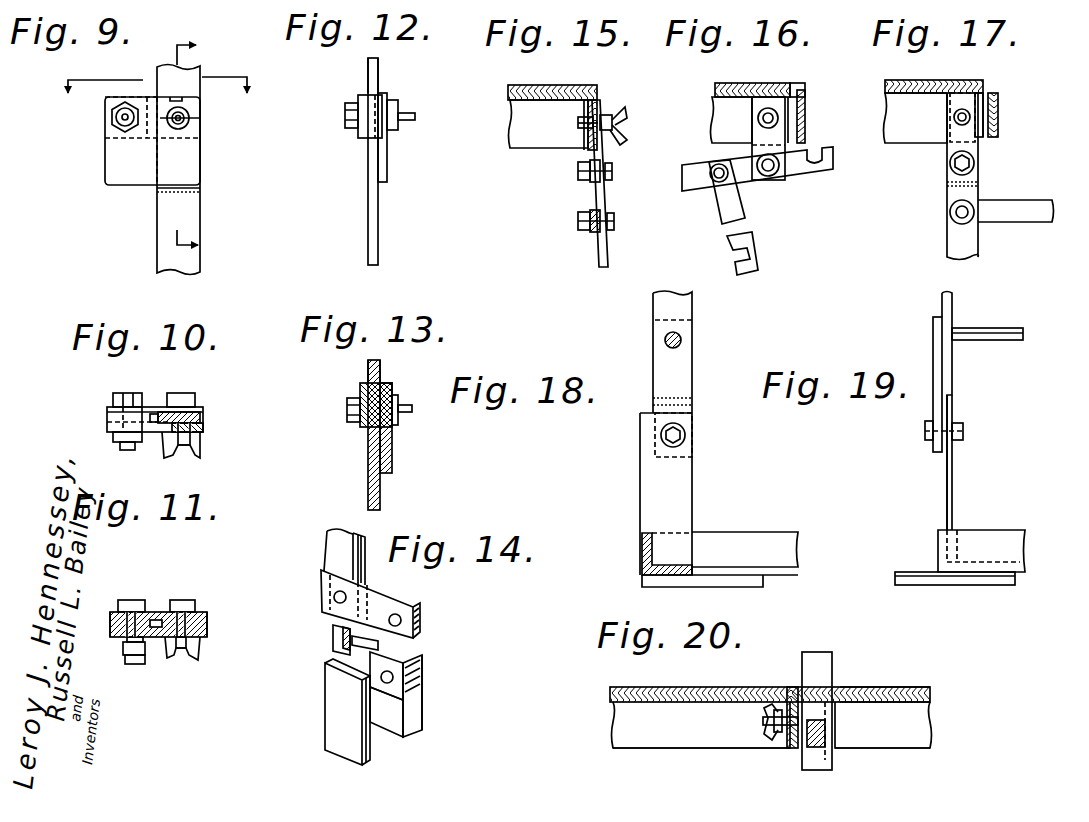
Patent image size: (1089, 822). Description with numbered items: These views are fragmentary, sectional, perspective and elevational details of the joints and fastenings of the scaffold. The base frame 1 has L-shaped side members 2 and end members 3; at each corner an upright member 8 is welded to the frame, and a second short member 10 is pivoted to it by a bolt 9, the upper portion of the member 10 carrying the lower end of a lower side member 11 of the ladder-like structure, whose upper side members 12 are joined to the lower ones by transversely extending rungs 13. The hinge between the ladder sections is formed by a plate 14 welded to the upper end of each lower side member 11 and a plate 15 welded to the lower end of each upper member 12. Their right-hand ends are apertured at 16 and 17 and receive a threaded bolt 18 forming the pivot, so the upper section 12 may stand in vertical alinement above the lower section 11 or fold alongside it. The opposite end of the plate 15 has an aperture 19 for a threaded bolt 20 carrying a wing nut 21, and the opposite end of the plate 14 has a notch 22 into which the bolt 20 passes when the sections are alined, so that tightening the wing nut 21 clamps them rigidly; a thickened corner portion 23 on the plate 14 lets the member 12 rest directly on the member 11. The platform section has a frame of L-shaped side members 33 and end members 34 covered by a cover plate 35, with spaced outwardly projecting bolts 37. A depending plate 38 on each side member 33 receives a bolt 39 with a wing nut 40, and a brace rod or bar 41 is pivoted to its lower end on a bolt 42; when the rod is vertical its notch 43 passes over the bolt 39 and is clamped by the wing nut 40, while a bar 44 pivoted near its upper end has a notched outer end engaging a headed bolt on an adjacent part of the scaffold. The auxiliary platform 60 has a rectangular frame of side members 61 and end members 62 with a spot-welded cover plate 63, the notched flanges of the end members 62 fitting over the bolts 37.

In FIG. 18, the base frame 1 is at (752, 530).
In FIG. 19, the base frame 1 is at (993, 530).
In FIG. 18, the side member 2 is at (712, 530).
In FIG. 18, the end member 3 is at (645, 545).
In FIG. 19, the end member 3 is at (1010, 548).
In FIG. 18, the upright member 8 is at (683, 487).
In FIG. 19, the upright member 8 is at (950, 483).
In FIG. 18, the bolt 9 is at (688, 437).
In FIG. 19, the bolt 9 is at (965, 427).
In FIG. 9, the second member 10 is at (149, 97).
In FIG. 18, the second member 10 is at (678, 360).
In FIG. 19, the second member 10 is at (937, 365).
In FIG. 9, the lower side member 11 is at (190, 217).
In FIG. 12, the lower side member 11 is at (378, 222).
In FIG. 13, the lower side member 11 is at (380, 490).
In FIG. 14, the lower side member 11 is at (345, 748).
In FIG. 18, the lower side member 11 is at (683, 303).
In FIG. 19, the lower side member 11 is at (950, 297).
In FIG. 9, the upper side member 12 is at (190, 71).
In FIG. 12, the upper side member 12 is at (378, 66).
In FIG. 13, the upper side member 12 is at (380, 366).
In FIG. 10, the upper side member 12 is at (205, 414).
In FIG. 14, the upper side member 12 is at (345, 550).
In FIG. 20, the upper side member 12 is at (825, 660).
In FIG. 9, the rung 13 is at (201, 143).
In FIG. 11, the rung 13 is at (208, 637).
In FIG. 18, the rung 13 is at (682, 336).
In FIG. 19, the rung 13 is at (1010, 330).
In FIG. 9, the plate 14 is at (140, 172).
In FIG. 12, the plate 14 is at (390, 165).
In FIG. 13, the plate 14 is at (394, 460).
In FIG. 10, the plate 14 is at (206, 432).
In FIG. 14, the plate 14 is at (426, 675).
In FIG. 9, the plate 15 is at (113, 133).
In FIG. 12, the plate 15 is at (357, 93).
In FIG. 13, the plate 15 is at (357, 386).
In FIG. 10, the plate 15 is at (206, 407).
In FIG. 11, the plate 15 is at (207, 612).
In FIG. 14, the plate 15 is at (415, 590).
In FIG. 20, the plate 15 is at (830, 742).
In FIG. 14, the aperture 16 is at (392, 677).
In FIG. 14, the aperture 17 is at (401, 620).
In FIG. 9, the threaded bolt 18 is at (123, 108).
In FIG. 12, the threaded bolt 18 is at (345, 117).
In FIG. 10, the threaded bolt 18 is at (126, 397).
In FIG. 11, the threaded bolt 18 is at (130, 601).
In FIG. 14, the aperture 19 is at (334, 596).
In FIG. 9, the threaded bolt 20 is at (179, 128).
In FIG. 13, the threaded bolt 20 is at (347, 410).
In FIG. 10, the threaded bolt 20 is at (180, 396).
In FIG. 11, the threaded bolt 20 is at (181, 601).
In FIG. 9, the wing nut 21 is at (188, 120).
In FIG. 12, the wing nut 21 is at (410, 114).
In FIG. 13, the wing nut 21 is at (405, 406).
In FIG. 10, the wing nut 21 is at (196, 450).
In FIG. 11, the wing nut 21 is at (173, 656).
In FIG. 14, the notch 22 is at (333, 628).
In FIG. 10, the thickened corner portion 23 is at (107, 418).
In FIG. 11, the thickened corner portion 23 is at (112, 628).
In FIG. 14, the thickened corner portion 23 is at (398, 690).
In FIG. 20, the thickened corner portion 23 is at (912, 728).
In FIG. 15, the side member 33 is at (599, 101).
In FIG. 16, the side member 33 is at (720, 128).
In FIG. 17, the side member 33 is at (905, 135).
In FIG. 15, the end member 34 is at (535, 140).
In FIG. 16, the end member 34 is at (806, 121).
In FIG. 17, the end member 34 is at (999, 113).
In FIG. 20, the end member 34 is at (840, 708).
In FIG. 15, the cover plate 35 is at (578, 78).
In FIG. 16, the cover plate 35 is at (778, 78).
In FIG. 17, the cover plate 35 is at (960, 71).
In FIG. 20, the cover plate 35 is at (886, 688).
In FIG. 20, the bolt 37 is at (762, 722).
In FIG. 15, the depending plate 38 is at (584, 157).
In FIG. 16, the depending plate 38 is at (748, 140).
In FIG. 17, the depending plate 38 is at (976, 149).
In FIG. 15, the bolt 39 is at (578, 123).
In FIG. 16, the bolt 39 is at (760, 116).
In FIG. 17, the bolt 39 is at (955, 118).
In FIG. 15, the wing nut 40 is at (628, 114).
In FIG. 16, the wing nut 40 is at (801, 92).
In FIG. 17, the wing nut 40 is at (980, 92).
In FIG. 15, the brace rod or bar 41 is at (607, 250).
In FIG. 16, the brace rod or bar 41 is at (698, 186).
In FIG. 17, the brace rod or bar 41 is at (976, 193).
In FIG. 15, the bolt 42 is at (614, 171).
In FIG. 16, the bolt 42 is at (778, 173).
In FIG. 17, the bolt 42 is at (950, 170).
In FIG. 16, the notch 43 is at (813, 150).
In FIG. 15, the bar 44 is at (592, 228).
In FIG. 16, the bar 44 is at (742, 218).
In FIG. 17, the bar 44 is at (1025, 206).
In FIG. 20, the auxiliary platform 60 is at (661, 742).
In FIG. 20, the side member 61 is at (715, 745).
In FIG. 20, the end member 62 is at (787, 690).
In FIG. 20, the cover plate 63 is at (702, 680).